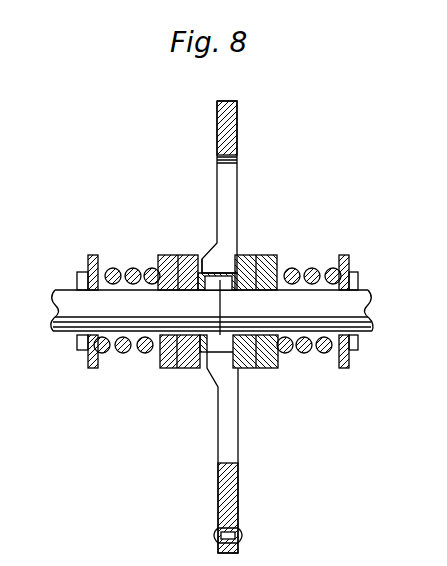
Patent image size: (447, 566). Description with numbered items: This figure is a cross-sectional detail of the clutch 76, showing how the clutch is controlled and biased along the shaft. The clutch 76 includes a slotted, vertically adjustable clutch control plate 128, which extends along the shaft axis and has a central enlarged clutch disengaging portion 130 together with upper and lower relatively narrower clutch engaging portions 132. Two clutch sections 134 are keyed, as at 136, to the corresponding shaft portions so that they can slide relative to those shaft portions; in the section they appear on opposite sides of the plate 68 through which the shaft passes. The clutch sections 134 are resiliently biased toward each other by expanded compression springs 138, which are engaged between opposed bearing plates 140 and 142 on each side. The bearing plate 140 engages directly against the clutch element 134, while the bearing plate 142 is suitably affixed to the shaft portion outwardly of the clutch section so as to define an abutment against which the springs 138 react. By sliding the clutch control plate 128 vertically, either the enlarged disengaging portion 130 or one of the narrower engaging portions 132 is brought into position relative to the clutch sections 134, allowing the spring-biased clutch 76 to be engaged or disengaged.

The plate 68 is at (64, 299).
The clutch 76 is at (260, 226).
The clutch control plate 128 is at (212, 98).
The clutch disengaging portion 130 is at (209, 253).
The clutch engaging portion 132 is at (228, 152).
The clutch section 134 is at (178, 368).
The key 136 is at (274, 256).
The compression spring 138 is at (300, 352).
The bearing plate 140 is at (259, 367).
The bearing plate 142 is at (350, 365).